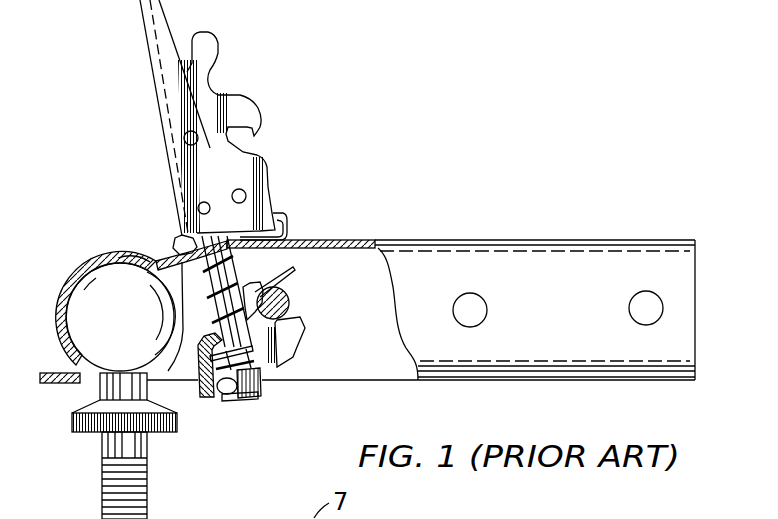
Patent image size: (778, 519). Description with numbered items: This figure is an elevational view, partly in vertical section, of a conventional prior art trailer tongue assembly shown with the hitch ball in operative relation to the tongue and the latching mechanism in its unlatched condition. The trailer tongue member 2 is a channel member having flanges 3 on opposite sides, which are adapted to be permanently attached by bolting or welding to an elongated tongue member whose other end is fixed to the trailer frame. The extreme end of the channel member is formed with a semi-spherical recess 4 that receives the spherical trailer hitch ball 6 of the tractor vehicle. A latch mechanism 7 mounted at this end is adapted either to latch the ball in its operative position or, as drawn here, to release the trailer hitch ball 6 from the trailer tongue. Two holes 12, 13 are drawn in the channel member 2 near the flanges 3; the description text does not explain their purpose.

The tongue member 2 is at (461, 274).
The flanges 3 is at (580, 346).
The semi-spherical recess 4 is at (110, 258).
The trailer hitch ball 6 is at (95, 305).
The latch mechanism 7 is at (264, 80).
The hole 12 is at (486, 298).
The hole 13 is at (636, 293).